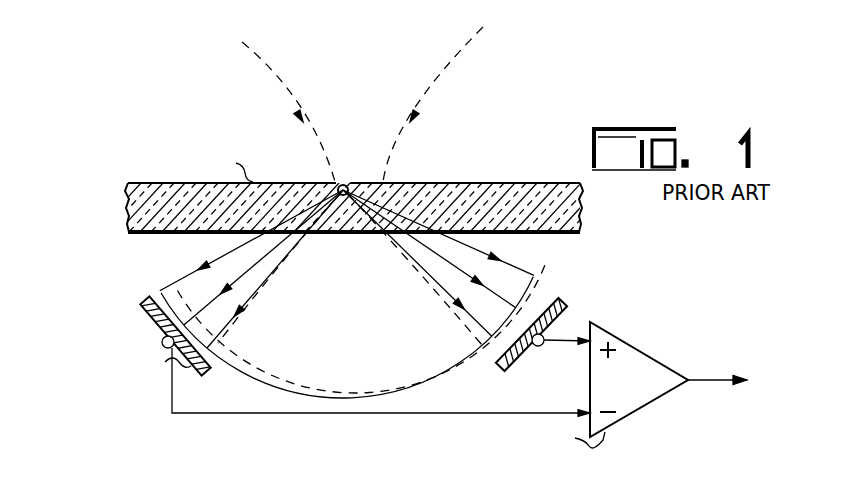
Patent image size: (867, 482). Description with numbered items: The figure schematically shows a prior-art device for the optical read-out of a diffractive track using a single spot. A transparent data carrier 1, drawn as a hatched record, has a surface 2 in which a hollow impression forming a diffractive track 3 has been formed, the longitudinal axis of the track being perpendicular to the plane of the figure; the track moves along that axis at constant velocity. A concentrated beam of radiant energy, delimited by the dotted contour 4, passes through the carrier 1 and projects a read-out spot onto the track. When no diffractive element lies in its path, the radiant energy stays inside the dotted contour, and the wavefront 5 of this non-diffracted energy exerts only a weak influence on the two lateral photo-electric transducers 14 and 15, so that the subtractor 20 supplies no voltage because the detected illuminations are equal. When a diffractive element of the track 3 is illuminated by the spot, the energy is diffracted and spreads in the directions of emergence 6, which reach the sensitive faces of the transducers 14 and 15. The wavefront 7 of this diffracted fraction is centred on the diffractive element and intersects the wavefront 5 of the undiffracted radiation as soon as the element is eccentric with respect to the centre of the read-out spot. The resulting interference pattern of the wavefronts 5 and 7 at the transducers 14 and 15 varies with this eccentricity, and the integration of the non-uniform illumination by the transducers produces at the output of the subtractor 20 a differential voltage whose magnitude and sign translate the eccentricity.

The transparent data carrier 1 is at (582, 213).
The surface 2 is at (558, 184).
The diffractive track 3 is at (343, 182).
The contour 4 is at (266, 71).
The wavefront 5 is at (260, 373).
The directions of emergence 6 is at (212, 264).
The wavefront 7 is at (443, 373).
The photo-electric transducer 14 is at (144, 307).
The photo-electric transducer 15 is at (577, 310).
The subtractor 20 is at (658, 363).